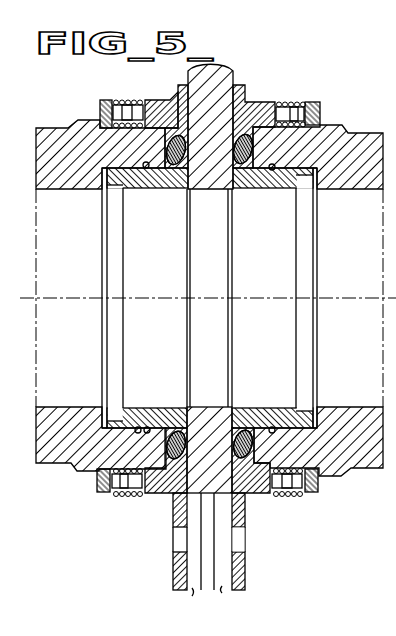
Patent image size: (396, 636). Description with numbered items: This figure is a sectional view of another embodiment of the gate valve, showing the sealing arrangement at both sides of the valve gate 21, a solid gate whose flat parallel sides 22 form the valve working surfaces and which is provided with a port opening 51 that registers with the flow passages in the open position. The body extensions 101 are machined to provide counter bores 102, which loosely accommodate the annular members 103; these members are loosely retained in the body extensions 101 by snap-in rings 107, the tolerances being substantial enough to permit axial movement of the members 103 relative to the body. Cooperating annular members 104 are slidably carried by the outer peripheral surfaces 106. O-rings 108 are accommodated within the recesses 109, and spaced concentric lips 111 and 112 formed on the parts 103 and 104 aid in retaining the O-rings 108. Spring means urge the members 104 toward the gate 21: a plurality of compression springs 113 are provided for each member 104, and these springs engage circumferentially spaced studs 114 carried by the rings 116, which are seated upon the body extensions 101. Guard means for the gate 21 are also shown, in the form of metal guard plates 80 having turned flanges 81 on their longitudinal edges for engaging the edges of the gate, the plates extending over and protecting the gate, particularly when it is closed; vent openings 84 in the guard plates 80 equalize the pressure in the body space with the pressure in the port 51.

The body extension 101 is at (50, 128).
The valve gate 21 is at (224, 69).
The flat parallel sides 22 is at (178, 82).
The port opening 51 is at (218, 312).
The guard plate 80 is at (173, 564).
The turned flange 81 is at (223, 589).
The vent opening 84 is at (236, 541).
The counter bore 102 is at (107, 167).
The annular member 103 is at (151, 189).
The cooperating annular member 104 is at (260, 103).
The outer peripheral surface 106 is at (322, 124).
The snap-in ring 107 is at (273, 171).
The O-ring 108 is at (212, 189).
The recess 109 is at (168, 100).
The concentric lip 111 is at (234, 139).
The concentric lip 112 is at (217, 407).
The compression spring 113 is at (291, 104).
The stud 114 is at (104, 115).
The ring 116 is at (100, 104).